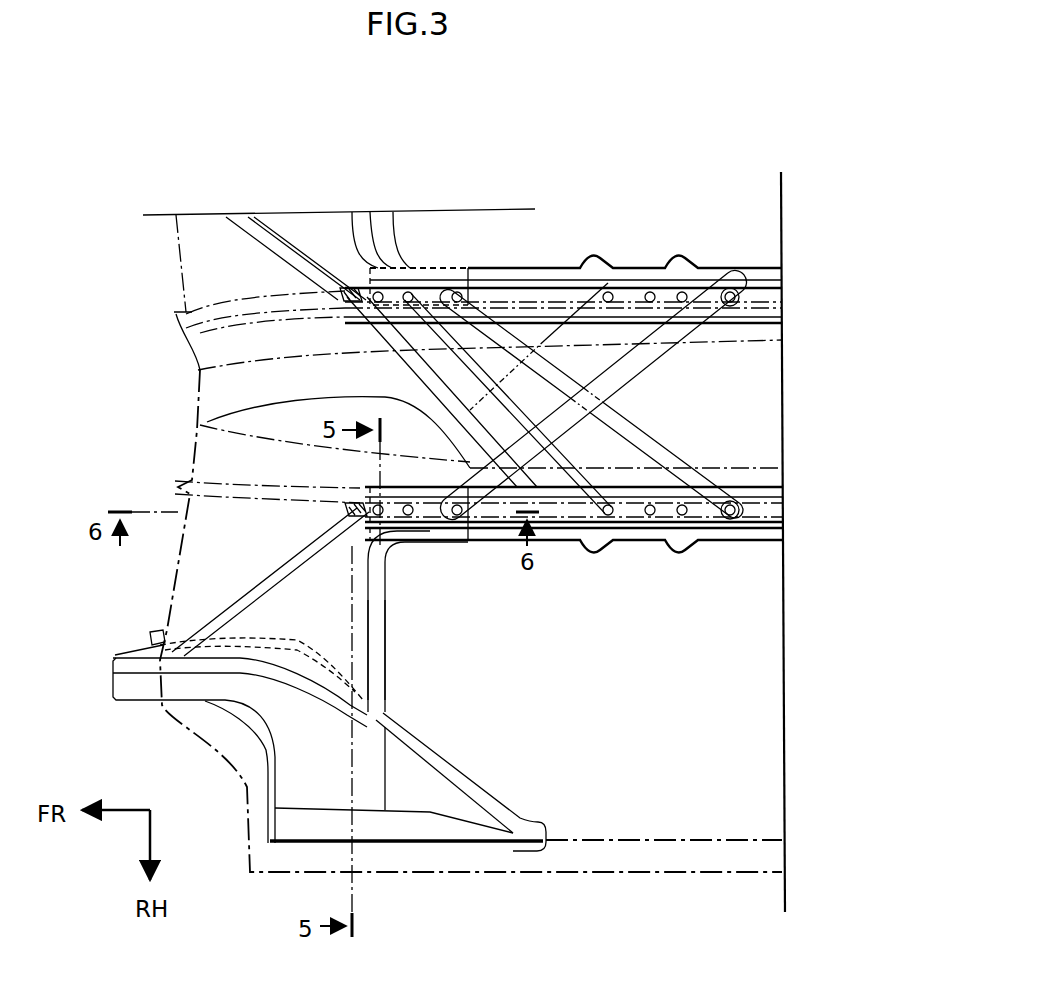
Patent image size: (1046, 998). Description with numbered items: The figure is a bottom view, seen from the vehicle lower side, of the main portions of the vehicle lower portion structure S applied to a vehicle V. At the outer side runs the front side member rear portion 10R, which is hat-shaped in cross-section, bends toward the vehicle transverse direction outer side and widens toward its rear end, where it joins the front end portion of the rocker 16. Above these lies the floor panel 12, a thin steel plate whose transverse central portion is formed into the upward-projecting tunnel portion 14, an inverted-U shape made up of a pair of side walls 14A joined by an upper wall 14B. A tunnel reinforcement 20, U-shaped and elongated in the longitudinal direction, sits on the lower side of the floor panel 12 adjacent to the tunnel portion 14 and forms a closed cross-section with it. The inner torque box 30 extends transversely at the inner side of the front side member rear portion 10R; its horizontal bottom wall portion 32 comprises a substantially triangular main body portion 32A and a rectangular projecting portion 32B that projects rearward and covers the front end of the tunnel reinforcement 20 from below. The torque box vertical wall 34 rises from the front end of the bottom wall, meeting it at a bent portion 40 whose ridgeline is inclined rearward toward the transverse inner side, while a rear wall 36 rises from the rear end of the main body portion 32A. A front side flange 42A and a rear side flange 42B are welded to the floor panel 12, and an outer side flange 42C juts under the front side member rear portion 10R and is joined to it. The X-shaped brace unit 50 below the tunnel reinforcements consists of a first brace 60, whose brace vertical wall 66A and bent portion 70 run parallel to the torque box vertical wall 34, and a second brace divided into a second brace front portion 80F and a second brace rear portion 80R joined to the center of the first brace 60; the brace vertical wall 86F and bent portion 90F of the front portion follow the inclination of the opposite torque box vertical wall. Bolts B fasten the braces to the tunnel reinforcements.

The front side member rear portion 10R is at (452, 782).
The floor panel 12 is at (175, 273).
The tunnel portion 14 is at (760, 398).
The side wall 14A is at (768, 323).
The upper wall 14B is at (765, 452).
The rocker 16 is at (598, 875).
The tunnel reinforcement 20 is at (718, 263).
The inner torque box 30 is at (236, 233).
The horizontal bottom wall portion 32 is at (305, 590).
The main body portion 32A is at (372, 613).
The projecting portion 32B is at (448, 546).
The torque box vertical wall 34 is at (273, 232).
The rear wall 36 is at (378, 642).
The bent portion 40 is at (292, 243).
The front side flange 42A is at (150, 638).
The rear side flange 42B is at (386, 689).
The outer side flange 42C is at (306, 688).
The brace unit 50 is at (714, 370).
The first brace 60 is at (638, 385).
The brace vertical wall 66A is at (505, 383).
The bent portion 70 is at (207, 423).
The second brace front portion 80F is at (518, 328).
The second brace rear portion 80R is at (640, 423).
The brace vertical wall 86F is at (428, 357).
The bent portion 90F is at (222, 381).
The bolt B is at (380, 292).
The vehicle lower portion structure S is at (568, 647).
The vehicle V is at (142, 132).